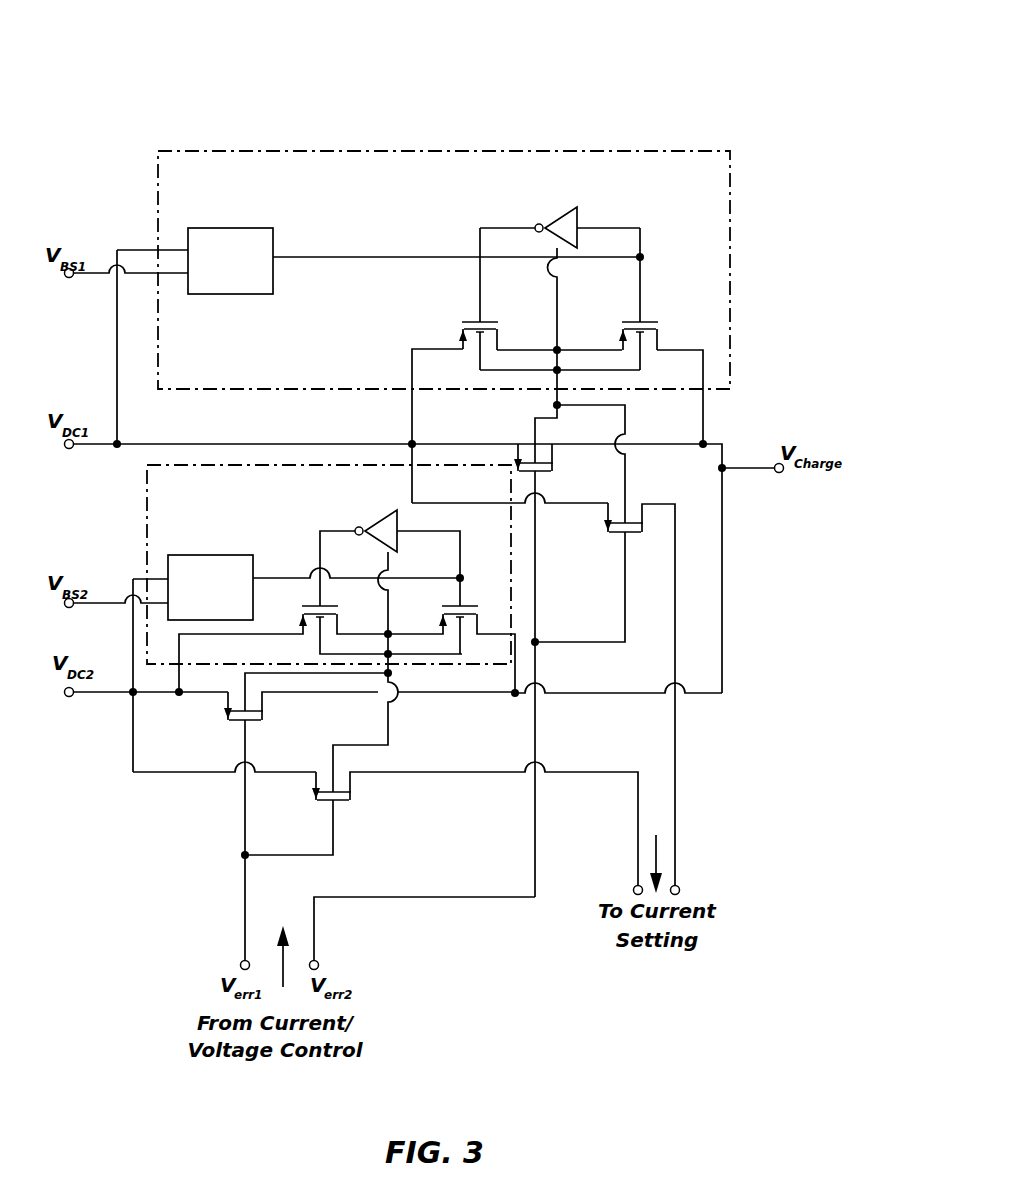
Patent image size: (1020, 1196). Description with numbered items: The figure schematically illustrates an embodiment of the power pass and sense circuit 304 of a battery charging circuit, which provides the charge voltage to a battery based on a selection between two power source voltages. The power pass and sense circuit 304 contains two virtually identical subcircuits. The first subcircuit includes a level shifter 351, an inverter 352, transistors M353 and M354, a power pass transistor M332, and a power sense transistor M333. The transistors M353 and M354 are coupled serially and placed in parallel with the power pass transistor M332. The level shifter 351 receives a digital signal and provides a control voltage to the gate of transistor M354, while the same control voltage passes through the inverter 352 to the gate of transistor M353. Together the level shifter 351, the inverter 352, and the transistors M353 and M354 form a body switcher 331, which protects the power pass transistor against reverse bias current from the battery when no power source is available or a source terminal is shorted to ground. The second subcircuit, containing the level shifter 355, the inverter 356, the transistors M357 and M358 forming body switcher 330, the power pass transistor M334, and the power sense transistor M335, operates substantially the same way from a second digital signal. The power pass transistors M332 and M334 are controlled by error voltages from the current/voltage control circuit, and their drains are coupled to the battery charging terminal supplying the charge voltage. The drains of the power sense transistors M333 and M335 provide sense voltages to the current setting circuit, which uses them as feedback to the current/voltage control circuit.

The power pass and sense circuit 304 is at (682, 67).
The body switcher 331 is at (328, 151).
The body switcher 330 is at (147, 522).
The level shifter 351 is at (236, 229).
The inverter 352 is at (568, 210).
The transistor M353 is at (457, 300).
The transistor M354 is at (668, 299).
The power pass transistor M332 is at (505, 659).
The power sense transistor M333 is at (605, 683).
The level shifter 355 is at (225, 556).
The inverter 356 is at (376, 511).
The transistor M357 is at (320, 649).
The transistor M358 is at (461, 649).
The power pass transistor M334 is at (285, 814).
The power sense transistor M335 is at (441, 817).